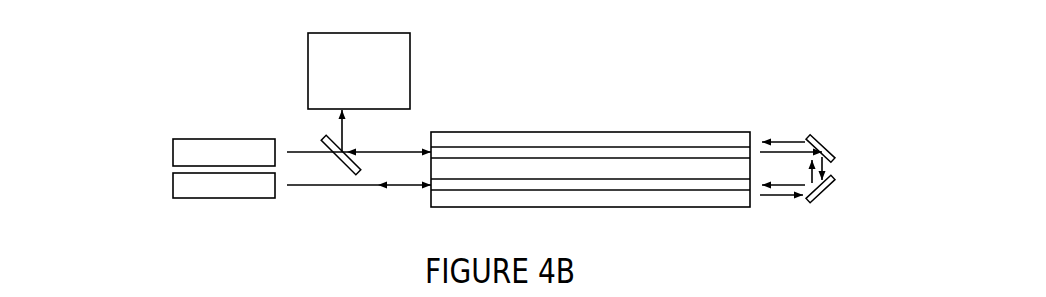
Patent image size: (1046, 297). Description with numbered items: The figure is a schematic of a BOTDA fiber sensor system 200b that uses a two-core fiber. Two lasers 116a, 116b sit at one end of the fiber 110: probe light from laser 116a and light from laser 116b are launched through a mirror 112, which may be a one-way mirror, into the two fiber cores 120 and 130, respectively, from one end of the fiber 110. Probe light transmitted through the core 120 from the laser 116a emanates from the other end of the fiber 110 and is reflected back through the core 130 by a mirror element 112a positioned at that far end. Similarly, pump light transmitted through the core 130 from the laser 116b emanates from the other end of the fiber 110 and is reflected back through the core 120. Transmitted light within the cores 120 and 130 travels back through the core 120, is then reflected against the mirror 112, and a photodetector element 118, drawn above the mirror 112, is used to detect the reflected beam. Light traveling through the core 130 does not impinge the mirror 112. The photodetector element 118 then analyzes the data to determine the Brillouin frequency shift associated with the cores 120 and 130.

The BOTDA fiber sensor system 200b is at (190, 84).
The photodetector element 118 is at (359, 71).
The laser 116a is at (224, 152).
The laser 116b is at (224, 185).
The mirror 112 is at (347, 166).
The fiber 110 is at (657, 133).
The fiber core 120 is at (723, 149).
The fiber core 130 is at (723, 187).
The mirror element 112a is at (821, 138).